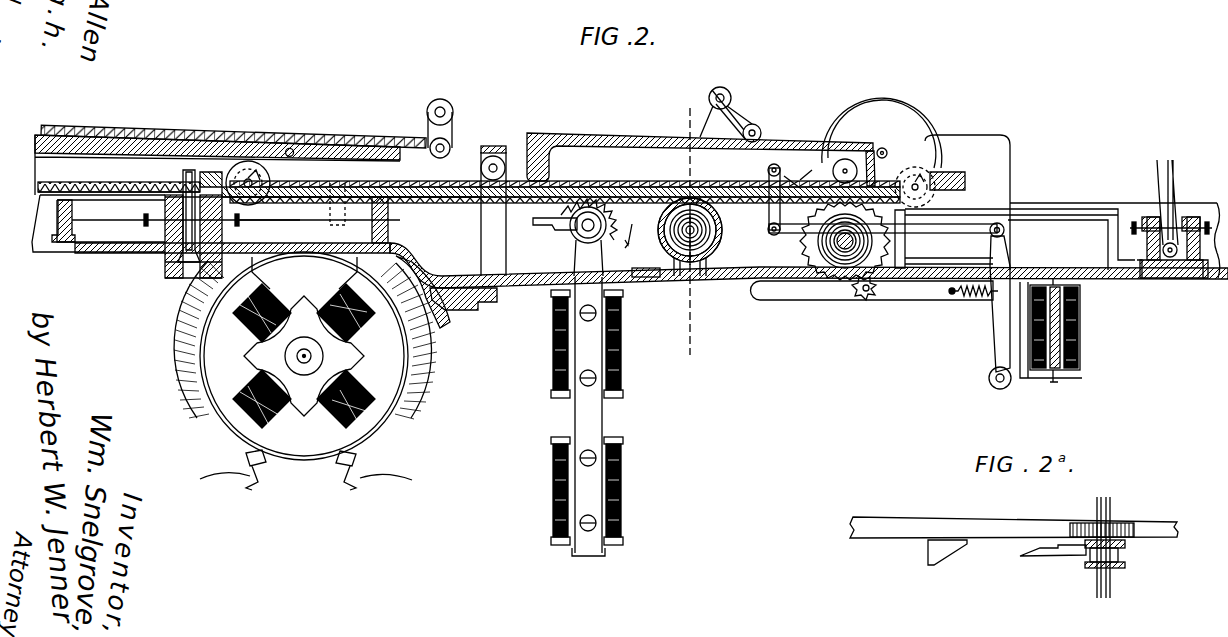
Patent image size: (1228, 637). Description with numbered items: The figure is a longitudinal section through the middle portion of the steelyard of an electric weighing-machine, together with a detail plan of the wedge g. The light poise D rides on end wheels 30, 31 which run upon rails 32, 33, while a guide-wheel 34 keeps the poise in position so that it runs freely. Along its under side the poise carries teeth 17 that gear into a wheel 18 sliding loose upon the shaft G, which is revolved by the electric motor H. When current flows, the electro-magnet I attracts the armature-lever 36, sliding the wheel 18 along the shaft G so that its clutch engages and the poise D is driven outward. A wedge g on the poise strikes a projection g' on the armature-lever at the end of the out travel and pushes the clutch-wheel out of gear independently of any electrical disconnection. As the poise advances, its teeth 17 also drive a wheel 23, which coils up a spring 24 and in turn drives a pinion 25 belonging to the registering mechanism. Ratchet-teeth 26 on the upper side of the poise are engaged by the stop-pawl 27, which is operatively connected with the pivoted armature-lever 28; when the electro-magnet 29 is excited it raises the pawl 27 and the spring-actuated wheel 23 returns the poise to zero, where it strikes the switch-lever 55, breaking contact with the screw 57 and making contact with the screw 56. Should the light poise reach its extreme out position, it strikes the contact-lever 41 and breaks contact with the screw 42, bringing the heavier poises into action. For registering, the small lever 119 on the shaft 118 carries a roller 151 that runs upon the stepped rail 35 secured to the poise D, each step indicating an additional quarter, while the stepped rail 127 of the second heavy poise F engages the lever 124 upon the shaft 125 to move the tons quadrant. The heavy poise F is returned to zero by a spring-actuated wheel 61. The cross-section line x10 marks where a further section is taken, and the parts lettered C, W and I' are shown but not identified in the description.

In FIG. 2, the stepped rail 127 is at (347, 150).
In FIG. 2, the shaft 125 is at (453, 108).
In FIG. 2, the lever 124 is at (450, 144).
In FIG. 2, the light poise D is at (340, 186).
In FIG. 2a, the light poise D is at (958, 523).
In FIG. 2, the second heavy poise F is at (630, 231).
In FIG. 2, the casing C is at (546, 230).
In FIG. 2, the switch-lever 55 is at (186, 186).
In FIG. 2, the screw 56 is at (142, 224).
In FIG. 2, the screw 57 is at (268, 230).
In FIG. 2, the end wheel 30 is at (248, 183).
In FIG. 2, the rail 32 is at (348, 220).
In FIG. 2, the wedge g is at (321, 214).
In FIG. 2a, the wedge g is at (947, 559).
In FIG. 2, the projection g' is at (550, 235).
In FIG. 2a, the projection g' is at (1053, 565).
In FIG. 2, the guide-wheel 34 is at (483, 248).
In FIG. 2, the stepped rail 35 is at (790, 142).
In FIG. 2, the teeth 17 is at (523, 215).
In FIG. 2, the wheel 18 is at (608, 216).
In FIG. 2a, the wheel 18 is at (1135, 540).
In FIG. 2, the shaft G is at (572, 235).
In FIG. 2a, the shaft G is at (1112, 586).
In FIG. 2, the ratchet-teeth 26 is at (626, 182).
In FIG. 2, the spring-actuated wheel 61 is at (712, 240).
In FIG. 2, the shaft 118 is at (712, 99).
In FIG. 2, the small lever 119 is at (740, 112).
In FIG. 2, the roller 151 is at (760, 128).
In FIG. 2, the section line x10 is at (696, 231).
In FIG. 2, the stop-pawl 27 is at (882, 191).
In FIG. 2, the wheel 23 is at (820, 244).
In FIG. 2, the spring 24 is at (838, 265).
In FIG. 2, the pinion 25 is at (862, 310).
In FIG. 2, the wheel W is at (882, 133).
In FIG. 2, the end wheel 31 is at (915, 187).
In FIG. 2, the rail 33 is at (968, 212).
In FIG. 2, the armature-lever 28 is at (1000, 338).
In FIG. 2, the electro-magnet 29 is at (1082, 345).
In FIG. 2, the contact-lever 41 is at (1176, 182).
In FIG. 2, the screw 42 is at (1165, 235).
In FIG. 2, the electric motor H is at (305, 371).
In FIG. 2, the armature-lever 36 is at (588, 416).
In FIG. 2a, the armature-lever 36 is at (1088, 562).
In FIG. 2, the electro-magnet I is at (593, 344).
In FIG. 2, the magnet coil I' is at (595, 491).